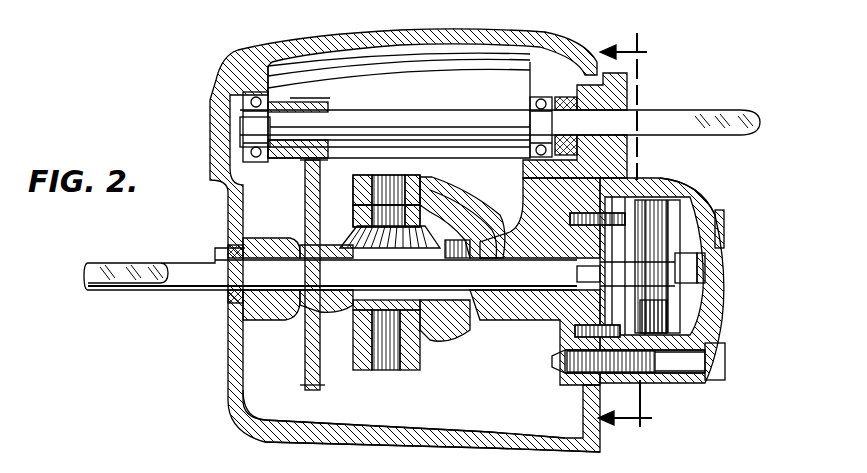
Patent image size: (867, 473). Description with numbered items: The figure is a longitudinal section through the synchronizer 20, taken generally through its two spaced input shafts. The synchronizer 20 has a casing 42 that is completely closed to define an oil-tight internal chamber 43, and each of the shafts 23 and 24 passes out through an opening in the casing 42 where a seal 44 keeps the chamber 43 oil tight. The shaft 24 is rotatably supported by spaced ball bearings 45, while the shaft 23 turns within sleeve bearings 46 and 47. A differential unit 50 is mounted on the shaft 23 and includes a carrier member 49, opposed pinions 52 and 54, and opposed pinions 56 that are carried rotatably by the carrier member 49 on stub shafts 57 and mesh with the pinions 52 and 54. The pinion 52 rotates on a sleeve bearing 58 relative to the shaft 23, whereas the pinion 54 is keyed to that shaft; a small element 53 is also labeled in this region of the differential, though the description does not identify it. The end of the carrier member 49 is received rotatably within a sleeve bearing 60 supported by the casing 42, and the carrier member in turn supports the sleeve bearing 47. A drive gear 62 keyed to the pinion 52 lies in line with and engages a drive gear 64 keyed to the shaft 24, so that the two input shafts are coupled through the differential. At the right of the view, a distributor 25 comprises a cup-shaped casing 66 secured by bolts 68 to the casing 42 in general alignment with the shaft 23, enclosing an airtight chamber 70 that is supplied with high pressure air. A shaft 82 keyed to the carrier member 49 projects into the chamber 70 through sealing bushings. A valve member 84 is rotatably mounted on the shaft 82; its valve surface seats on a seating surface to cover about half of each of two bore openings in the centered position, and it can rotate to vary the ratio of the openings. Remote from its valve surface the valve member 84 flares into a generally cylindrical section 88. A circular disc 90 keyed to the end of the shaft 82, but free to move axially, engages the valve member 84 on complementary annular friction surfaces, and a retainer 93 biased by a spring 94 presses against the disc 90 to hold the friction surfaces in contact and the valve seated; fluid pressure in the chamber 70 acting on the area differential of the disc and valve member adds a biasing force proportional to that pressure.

The synchronizer 20 is at (433, 243).
The shaft 23 is at (168, 290).
The shaft 24 is at (712, 88).
The distributor 25 is at (735, 215).
The casing 42 is at (228, 218).
The internal chamber 43 is at (413, 415).
The seal 44 is at (582, 82).
The ball bearings 45 is at (250, 106).
The sleeve bearing 46 is at (248, 312).
The sleeve bearing 47 is at (526, 250).
The carrier member 49 is at (455, 200).
The differential unit 50 is at (368, 395).
The pinion 52 is at (325, 318).
The pinion 53 is at (448, 248).
The pinion 54 is at (462, 340).
The pinions 56 is at (356, 222).
The stub shafts 57 is at (385, 175).
The sleeve bearing 58 is at (320, 318).
The sleeve bearing 60 is at (522, 328).
The drive gear 62 is at (305, 378).
The drive gear 64 is at (333, 90).
The cup-shaped casing 66 is at (720, 312).
The bolts 68 is at (725, 355).
The chamber 70 is at (700, 192).
The shaft 82 is at (605, 235).
The valve member 84 is at (655, 330).
The cylindrical section 88 is at (613, 373).
The circular disc 90 is at (700, 238).
The retainer 93 is at (715, 255).
The spring 94 is at (705, 275).